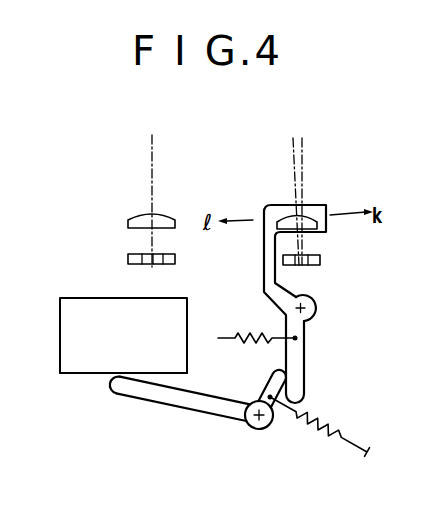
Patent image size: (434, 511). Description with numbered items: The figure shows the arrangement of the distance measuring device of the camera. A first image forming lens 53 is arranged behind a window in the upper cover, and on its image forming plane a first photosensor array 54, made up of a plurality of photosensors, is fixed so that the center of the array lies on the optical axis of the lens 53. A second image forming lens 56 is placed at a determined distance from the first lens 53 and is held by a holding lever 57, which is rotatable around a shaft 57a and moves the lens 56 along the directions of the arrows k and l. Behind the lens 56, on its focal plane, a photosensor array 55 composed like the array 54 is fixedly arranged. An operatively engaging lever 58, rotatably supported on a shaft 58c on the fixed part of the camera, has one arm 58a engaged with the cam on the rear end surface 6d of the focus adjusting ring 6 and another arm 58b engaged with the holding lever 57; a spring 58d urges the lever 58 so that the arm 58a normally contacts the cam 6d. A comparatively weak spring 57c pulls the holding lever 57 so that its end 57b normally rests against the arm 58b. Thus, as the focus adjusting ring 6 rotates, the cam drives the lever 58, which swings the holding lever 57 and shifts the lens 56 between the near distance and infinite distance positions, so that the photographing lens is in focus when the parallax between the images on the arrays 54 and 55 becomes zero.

The focus adjusting ring 6 is at (106, 357).
The back end surface of the ring 6d is at (88, 375).
The first image forming lens 53 is at (142, 219).
The first photosensor array 54 is at (129, 258).
The photosensor array 55 is at (322, 259).
The second image forming lens 56 is at (310, 216).
The holding lever 57 is at (292, 286).
The shaft 57a is at (317, 308).
The end of the holding member 57b is at (306, 393).
The spring 57c is at (258, 326).
The operatively engaging lever 58 is at (236, 421).
The arm 58a is at (117, 395).
The arm 58b is at (273, 378).
The shaft 58c is at (263, 428).
The spring 58d is at (325, 437).